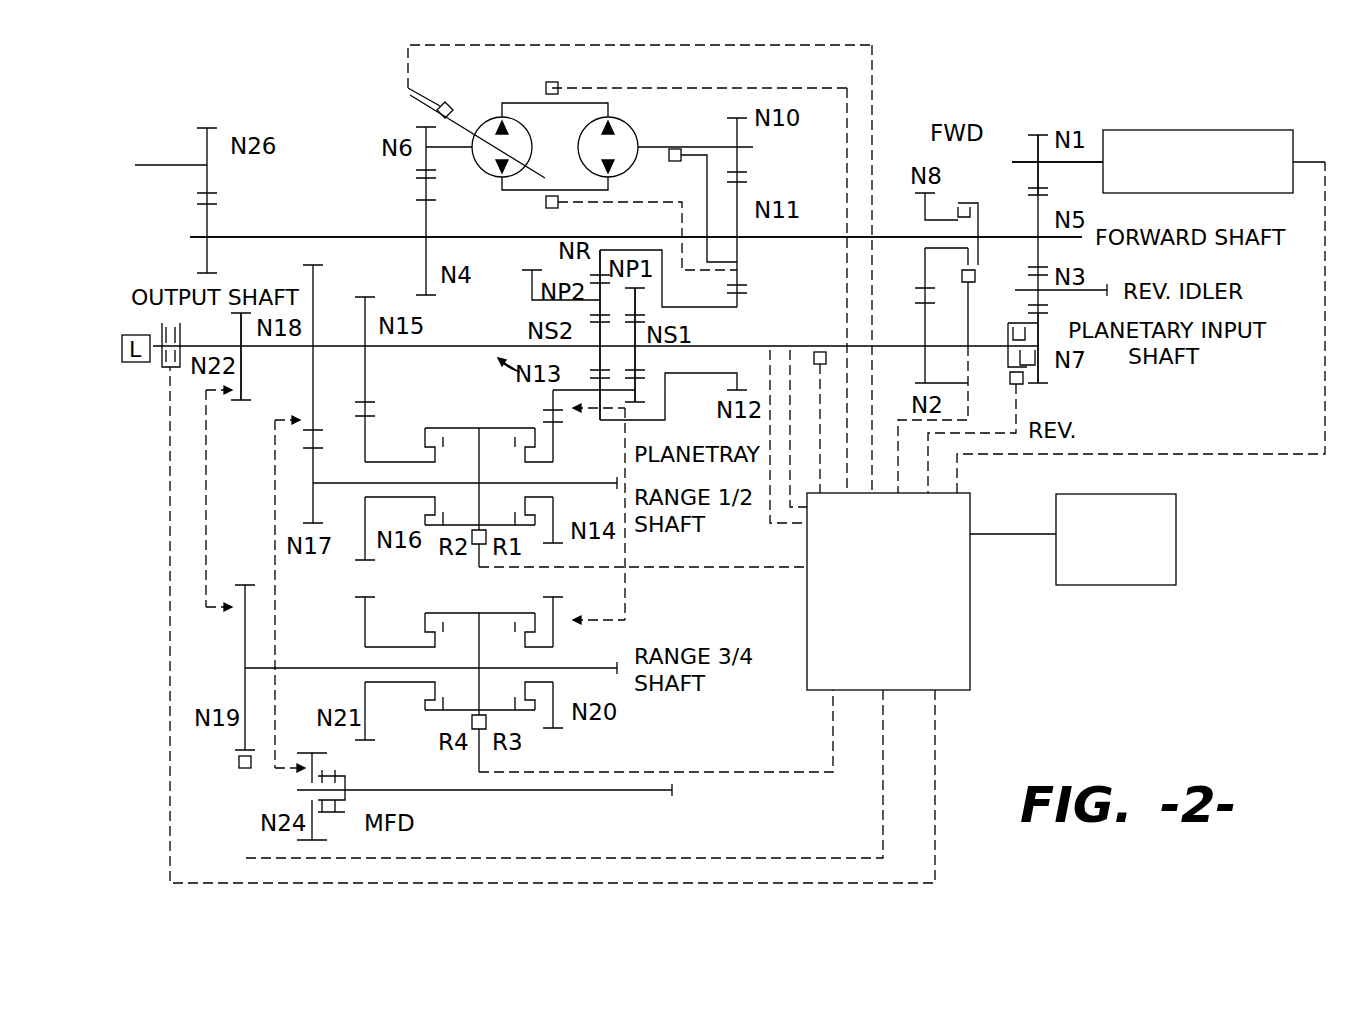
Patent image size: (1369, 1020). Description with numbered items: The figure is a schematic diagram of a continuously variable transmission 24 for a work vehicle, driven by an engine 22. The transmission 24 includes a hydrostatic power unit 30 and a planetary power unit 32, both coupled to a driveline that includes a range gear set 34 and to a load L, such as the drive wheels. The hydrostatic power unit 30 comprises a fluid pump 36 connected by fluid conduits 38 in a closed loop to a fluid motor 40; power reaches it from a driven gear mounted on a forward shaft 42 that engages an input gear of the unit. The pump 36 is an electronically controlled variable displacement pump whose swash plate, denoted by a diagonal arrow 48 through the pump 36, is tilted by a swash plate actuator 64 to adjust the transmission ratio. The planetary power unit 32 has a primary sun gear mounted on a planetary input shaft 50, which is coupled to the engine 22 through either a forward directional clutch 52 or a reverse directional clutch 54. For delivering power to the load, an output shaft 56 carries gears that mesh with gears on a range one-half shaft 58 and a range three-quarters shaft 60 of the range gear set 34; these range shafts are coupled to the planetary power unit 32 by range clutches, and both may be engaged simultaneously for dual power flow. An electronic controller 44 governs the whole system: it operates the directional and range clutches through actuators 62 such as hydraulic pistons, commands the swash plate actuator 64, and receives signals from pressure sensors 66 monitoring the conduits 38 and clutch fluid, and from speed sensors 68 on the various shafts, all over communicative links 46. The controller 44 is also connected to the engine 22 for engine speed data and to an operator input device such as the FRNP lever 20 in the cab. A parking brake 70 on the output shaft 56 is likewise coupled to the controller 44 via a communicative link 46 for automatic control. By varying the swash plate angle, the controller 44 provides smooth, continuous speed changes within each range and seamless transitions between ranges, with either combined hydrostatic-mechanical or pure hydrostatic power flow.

The FRNP lever 20 is at (1178, 538).
The engine 22 is at (1296, 137).
The continuously variable transmission 24 is at (1072, 115).
The hydrostatic power unit 30 is at (405, 100).
The planetary power unit 32 is at (459, 462).
The range gear set 34 is at (645, 580).
The fluid pump 36 is at (490, 180).
The fluid conduits 38 is at (615, 114).
The fluid motor 40 is at (640, 140).
The forward shaft 42 is at (280, 232).
The electronic controller 44 is at (972, 652).
The communicative link 46 is at (858, 120).
The diagonal arrow 48 is at (470, 170).
The planetary input shaft 50 is at (705, 345).
The forward directional clutch 52 is at (968, 200).
The reverse directional clutch 54 is at (1028, 382).
The output shaft 56 is at (297, 352).
The range 1/2 shaft 58 is at (572, 482).
The range 3/4 shaft 60 is at (292, 667).
The actuators 62 is at (978, 276).
The swash plate actuator 64 is at (435, 110).
The pressure sensors 66 is at (545, 86).
The speed sensors 68 is at (668, 162).
The parking brake 70 is at (195, 318).